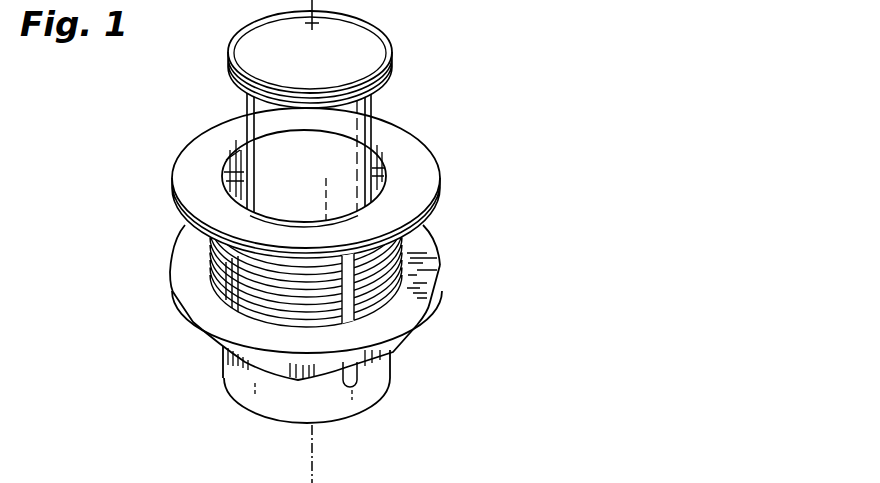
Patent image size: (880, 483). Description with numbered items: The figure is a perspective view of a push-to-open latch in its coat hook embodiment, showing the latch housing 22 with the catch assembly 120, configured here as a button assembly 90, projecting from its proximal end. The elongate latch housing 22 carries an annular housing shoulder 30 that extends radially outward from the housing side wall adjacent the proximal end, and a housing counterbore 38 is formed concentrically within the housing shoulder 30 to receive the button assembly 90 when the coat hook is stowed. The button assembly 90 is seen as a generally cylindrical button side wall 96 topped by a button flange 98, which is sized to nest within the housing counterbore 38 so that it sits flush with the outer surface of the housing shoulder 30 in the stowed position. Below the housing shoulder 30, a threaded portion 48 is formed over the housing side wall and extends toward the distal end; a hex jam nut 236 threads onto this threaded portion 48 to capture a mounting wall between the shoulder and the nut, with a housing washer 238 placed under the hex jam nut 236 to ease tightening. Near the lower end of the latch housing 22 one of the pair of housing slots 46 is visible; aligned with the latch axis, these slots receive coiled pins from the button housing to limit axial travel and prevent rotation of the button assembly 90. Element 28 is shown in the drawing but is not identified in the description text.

The button assembly 90 is at (397, 52).
The catch assembly 120 is at (383, 46).
The button flange 98 is at (388, 72).
The button side wall 96 is at (360, 124).
The housing shoulder 30 is at (413, 170).
The flange rim 28 is at (423, 210).
The housing counterbore 38 is at (242, 157).
The threaded portion 48 is at (395, 299).
The housing washer 238 is at (187, 263).
The hex jam nut 236 is at (207, 330).
The latch housing 22 is at (268, 400).
The housing slots 46 is at (350, 370).